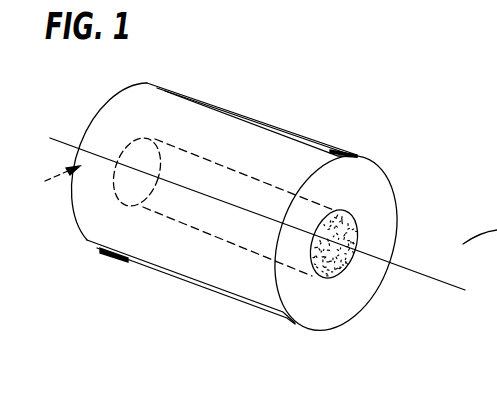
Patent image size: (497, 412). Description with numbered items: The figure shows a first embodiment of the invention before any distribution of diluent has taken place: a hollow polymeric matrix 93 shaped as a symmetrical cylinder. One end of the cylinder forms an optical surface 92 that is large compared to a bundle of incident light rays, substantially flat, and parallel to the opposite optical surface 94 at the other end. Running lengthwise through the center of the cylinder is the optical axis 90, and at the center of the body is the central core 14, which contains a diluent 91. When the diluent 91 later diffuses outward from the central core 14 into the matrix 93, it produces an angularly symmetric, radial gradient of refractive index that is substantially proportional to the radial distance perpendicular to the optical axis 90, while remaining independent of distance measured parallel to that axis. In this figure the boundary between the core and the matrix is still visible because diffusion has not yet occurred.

The central core 14 is at (263, 188).
The optical axis 90 is at (420, 270).
The diluent 91 is at (356, 218).
The optical surface 92 is at (358, 302).
The hollow polymeric matrix 93 is at (212, 117).
The optical surface 94 is at (51, 188).